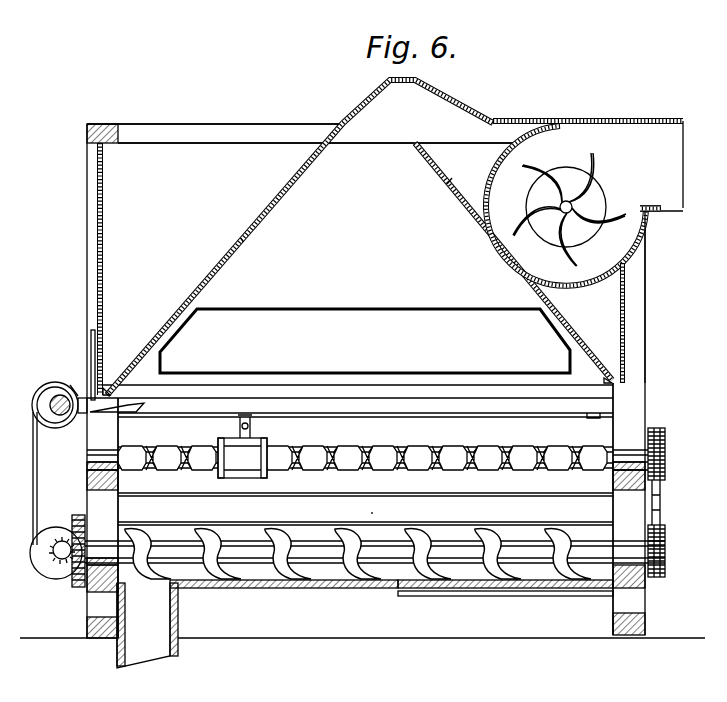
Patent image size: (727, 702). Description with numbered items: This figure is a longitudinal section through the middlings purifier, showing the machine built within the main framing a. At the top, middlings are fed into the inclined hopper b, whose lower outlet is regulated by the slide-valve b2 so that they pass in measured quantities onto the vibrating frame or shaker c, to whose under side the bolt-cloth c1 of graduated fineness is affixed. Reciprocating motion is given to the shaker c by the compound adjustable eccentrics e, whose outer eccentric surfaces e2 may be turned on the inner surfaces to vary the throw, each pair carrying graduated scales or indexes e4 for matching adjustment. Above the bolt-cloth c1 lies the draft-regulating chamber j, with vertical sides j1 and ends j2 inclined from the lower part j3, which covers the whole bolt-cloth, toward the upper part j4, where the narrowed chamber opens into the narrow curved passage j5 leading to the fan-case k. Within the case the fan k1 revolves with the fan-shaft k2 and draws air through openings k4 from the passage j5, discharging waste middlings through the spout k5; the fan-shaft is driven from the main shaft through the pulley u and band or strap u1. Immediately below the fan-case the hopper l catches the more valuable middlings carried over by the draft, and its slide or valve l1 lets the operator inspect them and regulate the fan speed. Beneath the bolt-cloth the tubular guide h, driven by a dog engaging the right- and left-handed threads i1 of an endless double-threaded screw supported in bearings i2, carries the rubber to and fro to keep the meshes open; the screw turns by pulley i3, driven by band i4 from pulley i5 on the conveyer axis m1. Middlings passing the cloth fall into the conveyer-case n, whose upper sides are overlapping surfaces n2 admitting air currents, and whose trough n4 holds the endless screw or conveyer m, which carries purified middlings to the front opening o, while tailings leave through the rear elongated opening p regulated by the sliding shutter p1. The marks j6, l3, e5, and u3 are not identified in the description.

The inclined hopper b is at (302, 259).
The slide-valve b2 is at (93, 365).
The draft-regulating chamber j is at (235, 259).
The chamber sides j1 is at (365, 322).
The chamber ends j2 is at (453, 182).
The lower part of chamber j3 is at (108, 388).
The upper part of chamber j4 is at (461, 259).
The narrow curved passage j5 is at (291, 246).
The partition joint j6 is at (240, 232).
The fan-case k is at (584, 203).
The fan k1 is at (566, 207).
The fan-shaft k2 is at (573, 203).
The fan-case openings k4 is at (569, 209).
The spout k5 is at (668, 166).
The hopper l is at (603, 323).
The slide or valve l1 is at (640, 352).
The chamber foot l3 is at (607, 370).
The vibrating frame or shaker c is at (350, 406).
The bolt-cloth c1 is at (365, 409).
The tubular guide h is at (242, 446).
The screw threads i1 is at (365, 450).
The bearings i2 is at (108, 446).
The pulley i3 is at (660, 452).
The strap or band i4 is at (663, 502).
The pulley i5 is at (661, 549).
The conveyer-case n is at (368, 509).
The overlapping surfaces n2 is at (365, 502).
The trough n4 is at (320, 580).
The elongated opening p is at (518, 578).
The sliding shutter or valve p1 is at (505, 599).
The endless screw or conveyer m is at (375, 554).
The conveyer axis m1 is at (102, 552).
The main framing a is at (366, 510).
The discharge opening o is at (147, 625).
The compound adjustable eccentrics e is at (55, 405).
The outer eccentric surface e2 is at (50, 396).
The pulley bracket e5 is at (72, 384).
The graduated scales or indexes e4 is at (41, 478).
The pulley u is at (78, 551).
The band or strap u1 is at (62, 550).
The pulley u3 is at (56, 547).